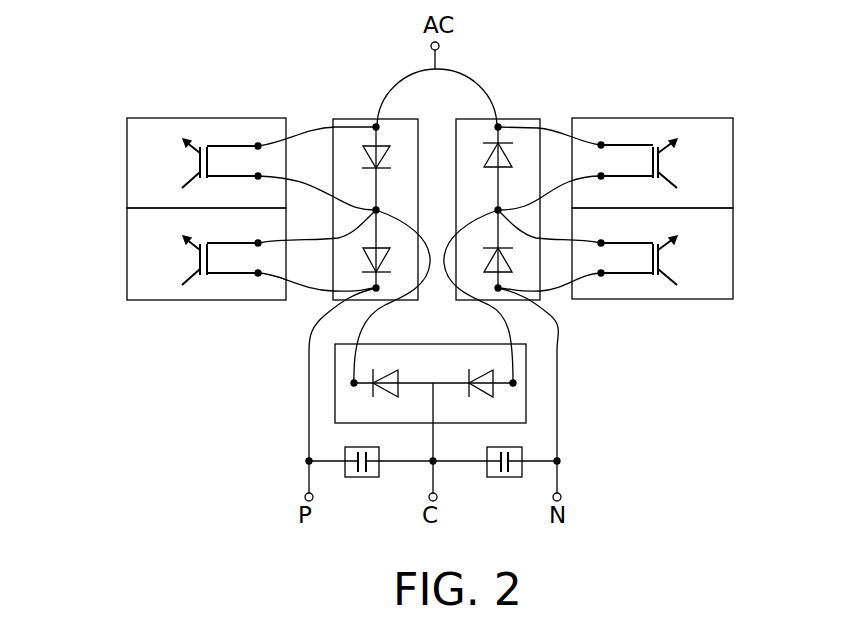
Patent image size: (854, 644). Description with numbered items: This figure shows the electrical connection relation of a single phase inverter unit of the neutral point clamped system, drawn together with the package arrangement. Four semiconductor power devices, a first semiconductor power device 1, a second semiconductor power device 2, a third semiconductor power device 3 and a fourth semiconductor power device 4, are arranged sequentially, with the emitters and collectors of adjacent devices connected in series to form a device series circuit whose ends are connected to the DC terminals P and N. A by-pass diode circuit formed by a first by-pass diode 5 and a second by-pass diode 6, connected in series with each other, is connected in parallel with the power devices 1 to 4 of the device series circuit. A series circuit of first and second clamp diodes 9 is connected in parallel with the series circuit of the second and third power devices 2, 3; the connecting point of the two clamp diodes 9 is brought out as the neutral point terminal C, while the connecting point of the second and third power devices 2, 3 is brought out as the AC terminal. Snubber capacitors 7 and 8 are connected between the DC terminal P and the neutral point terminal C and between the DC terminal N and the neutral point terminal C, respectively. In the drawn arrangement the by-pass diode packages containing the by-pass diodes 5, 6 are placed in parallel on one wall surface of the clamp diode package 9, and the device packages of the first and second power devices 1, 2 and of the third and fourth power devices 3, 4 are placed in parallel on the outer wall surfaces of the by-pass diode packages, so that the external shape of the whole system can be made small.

The first semiconductor power device 1 is at (127, 254).
The second semiconductor power device 2 is at (127, 152).
The third semiconductor power device 3 is at (733, 145).
The fourth semiconductor power device 4 is at (733, 243).
The by-pass diode 5 is at (347, 118).
The by-pass diode 6 is at (527, 118).
The snubber capacitor 7 is at (361, 478).
The snubber capacitor 8 is at (506, 478).
The clamp diodes 9 is at (526, 395).